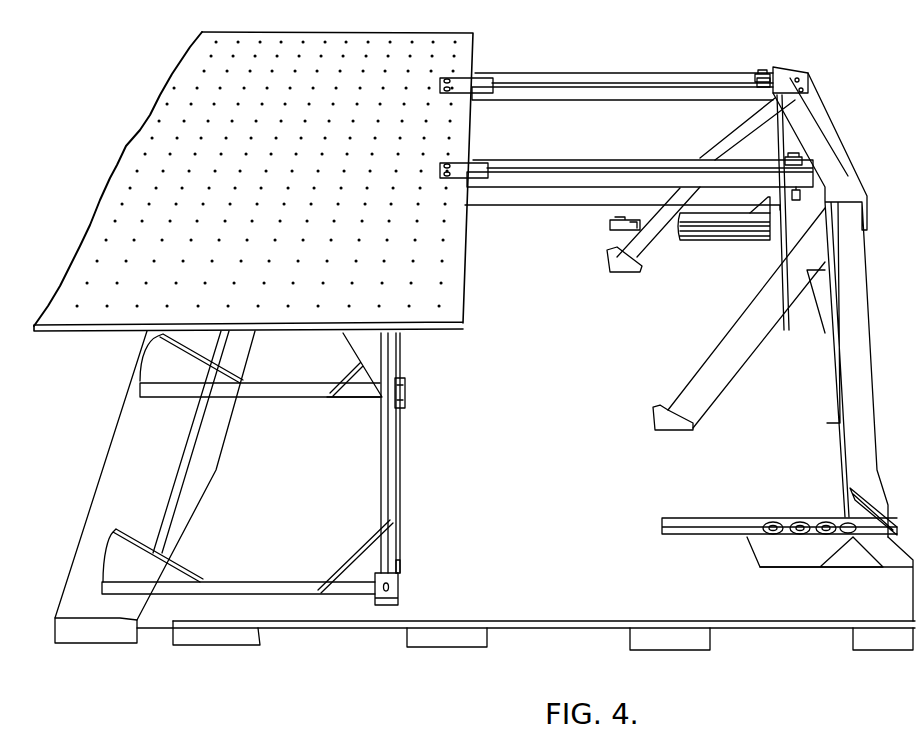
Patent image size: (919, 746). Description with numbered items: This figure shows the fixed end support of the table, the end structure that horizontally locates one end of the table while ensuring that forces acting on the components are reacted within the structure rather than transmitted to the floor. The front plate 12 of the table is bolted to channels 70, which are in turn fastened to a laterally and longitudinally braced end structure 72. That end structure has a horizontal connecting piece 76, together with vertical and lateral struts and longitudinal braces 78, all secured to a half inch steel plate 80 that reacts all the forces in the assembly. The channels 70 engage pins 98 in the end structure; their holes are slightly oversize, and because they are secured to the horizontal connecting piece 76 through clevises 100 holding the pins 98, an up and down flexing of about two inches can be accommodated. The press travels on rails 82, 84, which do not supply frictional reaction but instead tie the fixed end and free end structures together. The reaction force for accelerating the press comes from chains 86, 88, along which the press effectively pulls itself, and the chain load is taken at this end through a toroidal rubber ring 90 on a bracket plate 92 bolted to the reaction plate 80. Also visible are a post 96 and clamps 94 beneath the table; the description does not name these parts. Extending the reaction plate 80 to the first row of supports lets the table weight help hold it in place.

The front plate 12 is at (474, 44).
The channels 70 is at (613, 73).
The end structure 72 is at (883, 152).
The horizontal connecting piece 76 is at (825, 133).
The longitudinal braces 78 is at (720, 135).
The steel plate 80 is at (530, 628).
The rail 82 is at (730, 230).
The rail 84 is at (710, 540).
The chain 86 is at (618, 227).
The chain 88 is at (797, 540).
The toroidal rubber ring 90 is at (862, 505).
The bracket plate 92 is at (850, 558).
The clamps 94 is at (403, 563).
The post 96 is at (380, 473).
The pins 98 is at (768, 72).
The clevises 100 is at (752, 78).